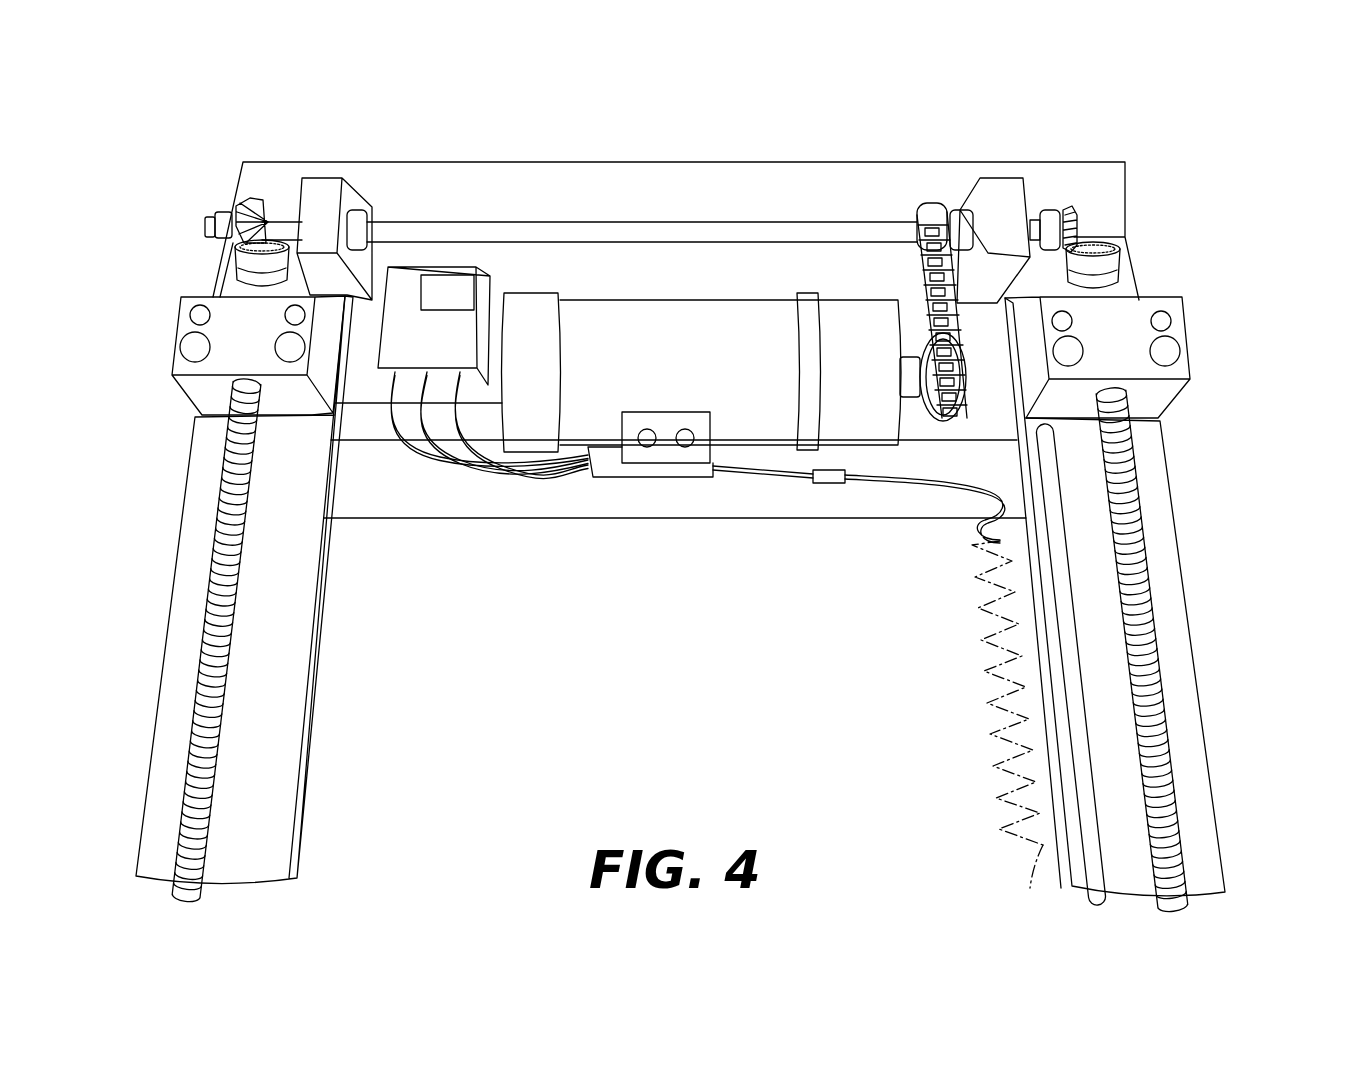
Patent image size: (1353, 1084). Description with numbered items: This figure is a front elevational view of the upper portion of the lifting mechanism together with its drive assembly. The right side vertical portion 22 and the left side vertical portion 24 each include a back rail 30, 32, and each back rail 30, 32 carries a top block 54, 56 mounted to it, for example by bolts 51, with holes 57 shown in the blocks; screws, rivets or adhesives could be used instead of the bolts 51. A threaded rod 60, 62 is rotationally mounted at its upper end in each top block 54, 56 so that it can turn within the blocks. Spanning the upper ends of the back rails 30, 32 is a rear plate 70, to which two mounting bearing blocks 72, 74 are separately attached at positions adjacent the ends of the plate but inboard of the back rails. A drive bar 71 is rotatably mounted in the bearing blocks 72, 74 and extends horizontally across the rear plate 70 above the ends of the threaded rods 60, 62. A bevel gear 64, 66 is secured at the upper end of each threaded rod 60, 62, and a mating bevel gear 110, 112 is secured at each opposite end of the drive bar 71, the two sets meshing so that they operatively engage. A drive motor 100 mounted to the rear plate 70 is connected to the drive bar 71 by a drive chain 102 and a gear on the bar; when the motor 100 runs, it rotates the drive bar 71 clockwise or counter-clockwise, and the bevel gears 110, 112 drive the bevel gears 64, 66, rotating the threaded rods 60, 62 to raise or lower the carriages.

The right side vertical portion 22 is at (1233, 809).
The left side vertical portion 24 is at (343, 823).
The back rail 30 is at (1195, 728).
The back rail 32 is at (295, 623).
The bolts 51 is at (1177, 348).
The top block 54 is at (1160, 402).
The top block 56 is at (180, 363).
The mounting holes 57 is at (187, 340).
The threaded rod 60 is at (1163, 790).
The threaded rod 62 is at (203, 762).
The bevel gear 64 is at (1132, 249).
The bevel gear 66 is at (213, 260).
The rear plate 70 is at (556, 200).
The drive bar 71 is at (633, 236).
The mounting bearing block 72 is at (998, 183).
The mounting bearing block 74 is at (323, 190).
The drive motor 100 is at (648, 347).
The drive chain 102 is at (925, 203).
The mating bevel gear 110 is at (1063, 207).
The mating bevel gear 112 is at (262, 210).